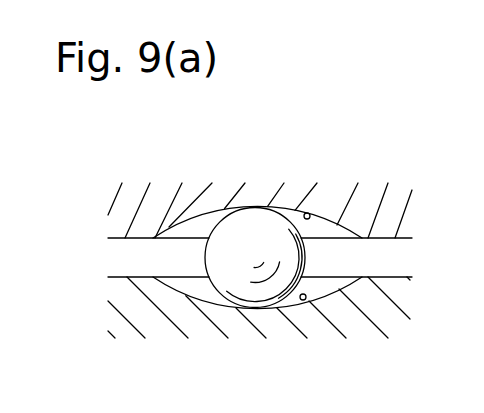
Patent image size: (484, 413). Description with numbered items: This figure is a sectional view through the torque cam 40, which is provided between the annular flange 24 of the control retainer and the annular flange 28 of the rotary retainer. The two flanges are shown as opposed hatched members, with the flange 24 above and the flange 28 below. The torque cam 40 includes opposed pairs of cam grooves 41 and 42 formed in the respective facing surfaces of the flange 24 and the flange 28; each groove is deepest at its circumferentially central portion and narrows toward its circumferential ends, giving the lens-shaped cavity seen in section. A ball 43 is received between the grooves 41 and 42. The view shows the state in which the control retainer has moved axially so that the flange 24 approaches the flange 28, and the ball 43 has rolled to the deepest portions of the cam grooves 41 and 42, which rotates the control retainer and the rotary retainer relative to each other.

The annular flange 24 is at (128, 218).
The annular flange 28 is at (118, 317).
The torque cam 40 is at (211, 195).
The cam grooves 41 is at (312, 217).
The cam grooves 42 is at (307, 300).
The balls 43 is at (237, 284).